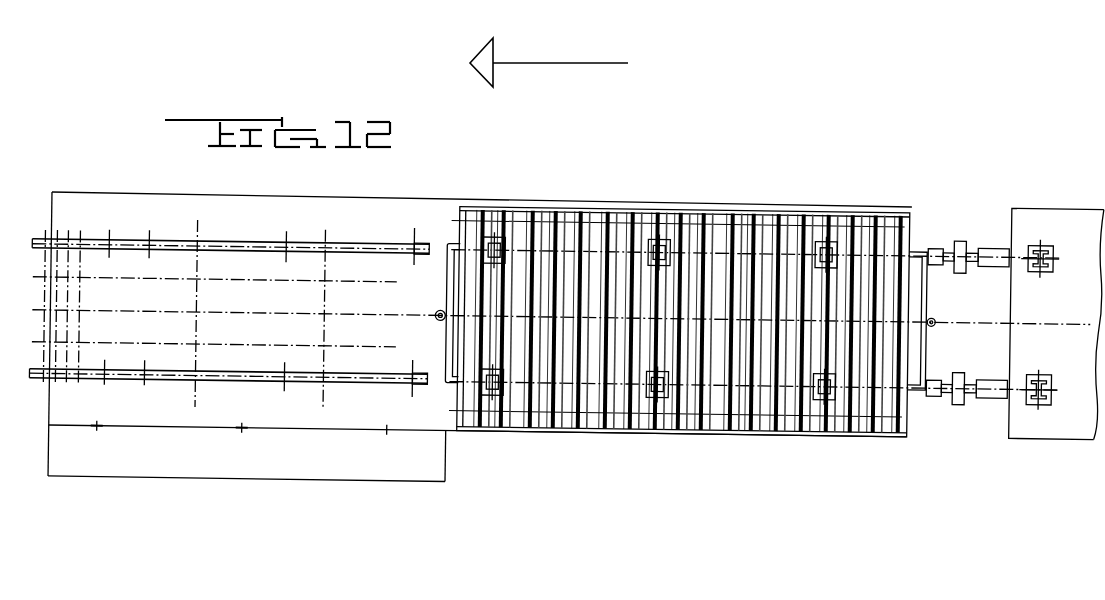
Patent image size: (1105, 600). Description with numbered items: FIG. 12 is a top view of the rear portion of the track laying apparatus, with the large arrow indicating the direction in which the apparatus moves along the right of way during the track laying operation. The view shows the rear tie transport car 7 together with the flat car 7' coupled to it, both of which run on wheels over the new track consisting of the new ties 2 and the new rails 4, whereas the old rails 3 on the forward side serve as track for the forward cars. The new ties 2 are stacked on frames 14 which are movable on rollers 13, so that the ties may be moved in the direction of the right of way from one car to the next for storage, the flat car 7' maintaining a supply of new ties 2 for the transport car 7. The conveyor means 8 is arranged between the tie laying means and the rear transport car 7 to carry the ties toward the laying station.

The new ties 2 is at (769, 227).
The old rails 3 is at (189, 275).
The new rails 4 is at (115, 375).
The rear tie transport car 7 is at (480, 357).
The rear flat car 7' is at (1056, 343).
The conveyor means 8 is at (265, 240).
The rollers 13 is at (1036, 229).
The frames 14 is at (449, 242).